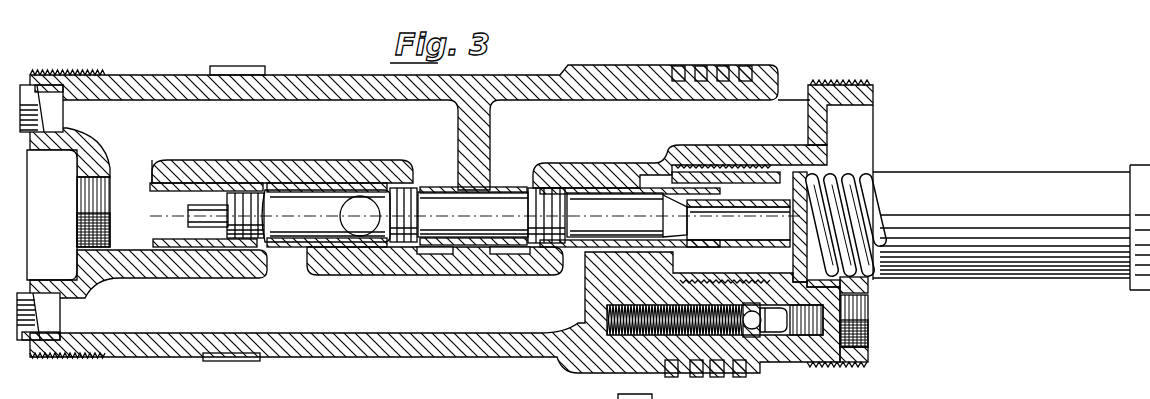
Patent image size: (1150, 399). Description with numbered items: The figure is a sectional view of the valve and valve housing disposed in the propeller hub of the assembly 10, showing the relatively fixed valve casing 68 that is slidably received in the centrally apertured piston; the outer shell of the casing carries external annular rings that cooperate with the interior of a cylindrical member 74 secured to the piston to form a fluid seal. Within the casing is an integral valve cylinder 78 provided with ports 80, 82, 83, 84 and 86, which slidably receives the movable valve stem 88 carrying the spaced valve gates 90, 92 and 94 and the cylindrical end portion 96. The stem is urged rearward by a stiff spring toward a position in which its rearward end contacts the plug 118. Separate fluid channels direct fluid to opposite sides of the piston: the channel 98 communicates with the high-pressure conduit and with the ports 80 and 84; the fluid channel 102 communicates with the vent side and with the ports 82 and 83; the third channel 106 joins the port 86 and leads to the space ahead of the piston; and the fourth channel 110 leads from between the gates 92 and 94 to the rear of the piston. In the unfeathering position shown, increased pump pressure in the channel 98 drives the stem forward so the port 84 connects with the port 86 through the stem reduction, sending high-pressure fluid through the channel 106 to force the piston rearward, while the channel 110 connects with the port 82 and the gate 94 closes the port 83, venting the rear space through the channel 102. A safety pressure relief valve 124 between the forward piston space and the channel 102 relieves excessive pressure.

The firearm receiver assembly 10 is at (182, 79).
The valve casing 68 is at (432, 357).
The cylindrical member 74 is at (564, 390).
The valve cylinder 78 is at (303, 160).
The valve port 80 is at (137, 173).
The valve port 82 is at (293, 250).
The valve port 83 is at (578, 250).
The valve port 84 is at (433, 182).
The valve port 86 is at (517, 182).
The movable valve stem 88 is at (188, 212).
The valve gate 90 is at (253, 263).
The valve gate 92 is at (402, 160).
The valve gate 94 is at (530, 257).
The cylindrical end portion 96 is at (770, 200).
The channel 98 is at (332, 117).
The fluid channel 102 is at (197, 310).
The third channel 106 is at (617, 133).
The fourth channel 110 is at (352, 200).
The plug 118 is at (77, 192).
The safety pressure relief valve 124 is at (773, 368).